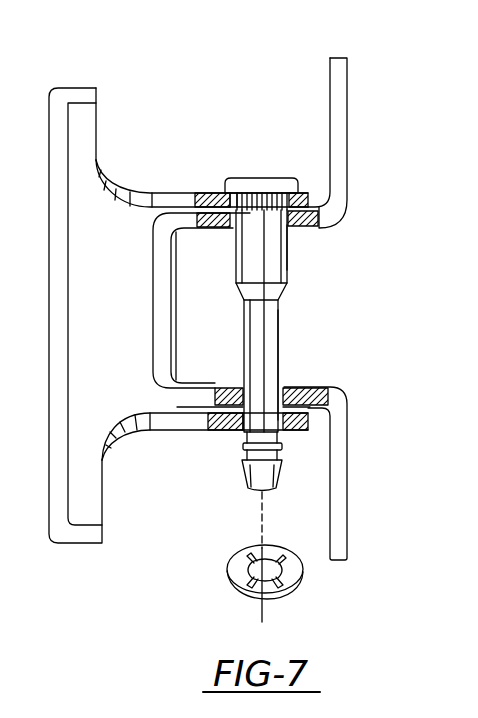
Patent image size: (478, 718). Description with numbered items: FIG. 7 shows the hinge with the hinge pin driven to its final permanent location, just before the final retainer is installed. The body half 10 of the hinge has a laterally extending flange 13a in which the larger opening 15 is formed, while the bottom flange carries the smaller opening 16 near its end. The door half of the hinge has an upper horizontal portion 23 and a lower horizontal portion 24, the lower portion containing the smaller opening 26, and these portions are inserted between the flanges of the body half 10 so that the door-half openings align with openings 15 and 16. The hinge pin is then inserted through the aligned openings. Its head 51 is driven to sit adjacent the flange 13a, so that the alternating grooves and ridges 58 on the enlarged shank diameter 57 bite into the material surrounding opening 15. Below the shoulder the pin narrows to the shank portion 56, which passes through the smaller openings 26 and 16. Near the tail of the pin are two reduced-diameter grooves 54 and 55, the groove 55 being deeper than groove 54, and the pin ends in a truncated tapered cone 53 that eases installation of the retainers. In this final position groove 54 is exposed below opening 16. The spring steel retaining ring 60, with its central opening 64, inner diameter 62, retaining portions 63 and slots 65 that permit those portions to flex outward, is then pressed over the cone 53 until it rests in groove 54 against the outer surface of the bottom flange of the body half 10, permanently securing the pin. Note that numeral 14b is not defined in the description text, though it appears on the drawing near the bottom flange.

The body half 10 is at (122, 116).
The laterally extending flange 13a is at (188, 202).
The lower flange of bracket 14b is at (203, 420).
The opening 15 is at (232, 200).
The opening 16 is at (242, 414).
The upper horizontal portion 23 is at (214, 220).
The lower horizontal portion 24 is at (231, 389).
The opening 26 is at (303, 387).
The head 51 is at (236, 178).
The truncated tapered cone 53 is at (250, 480).
The groove 54 is at (283, 447).
The groove 55 is at (283, 456).
The shank portion 56 is at (281, 343).
The enlarged shank diameter 57 is at (282, 250).
The grooves and ridges 58 is at (275, 178).
The retaining ring 60 is at (290, 583).
The inner diameter 62 is at (270, 558).
The retaining portion 63 is at (249, 565).
The opening 64 is at (258, 580).
The slots 65 is at (209, 565).